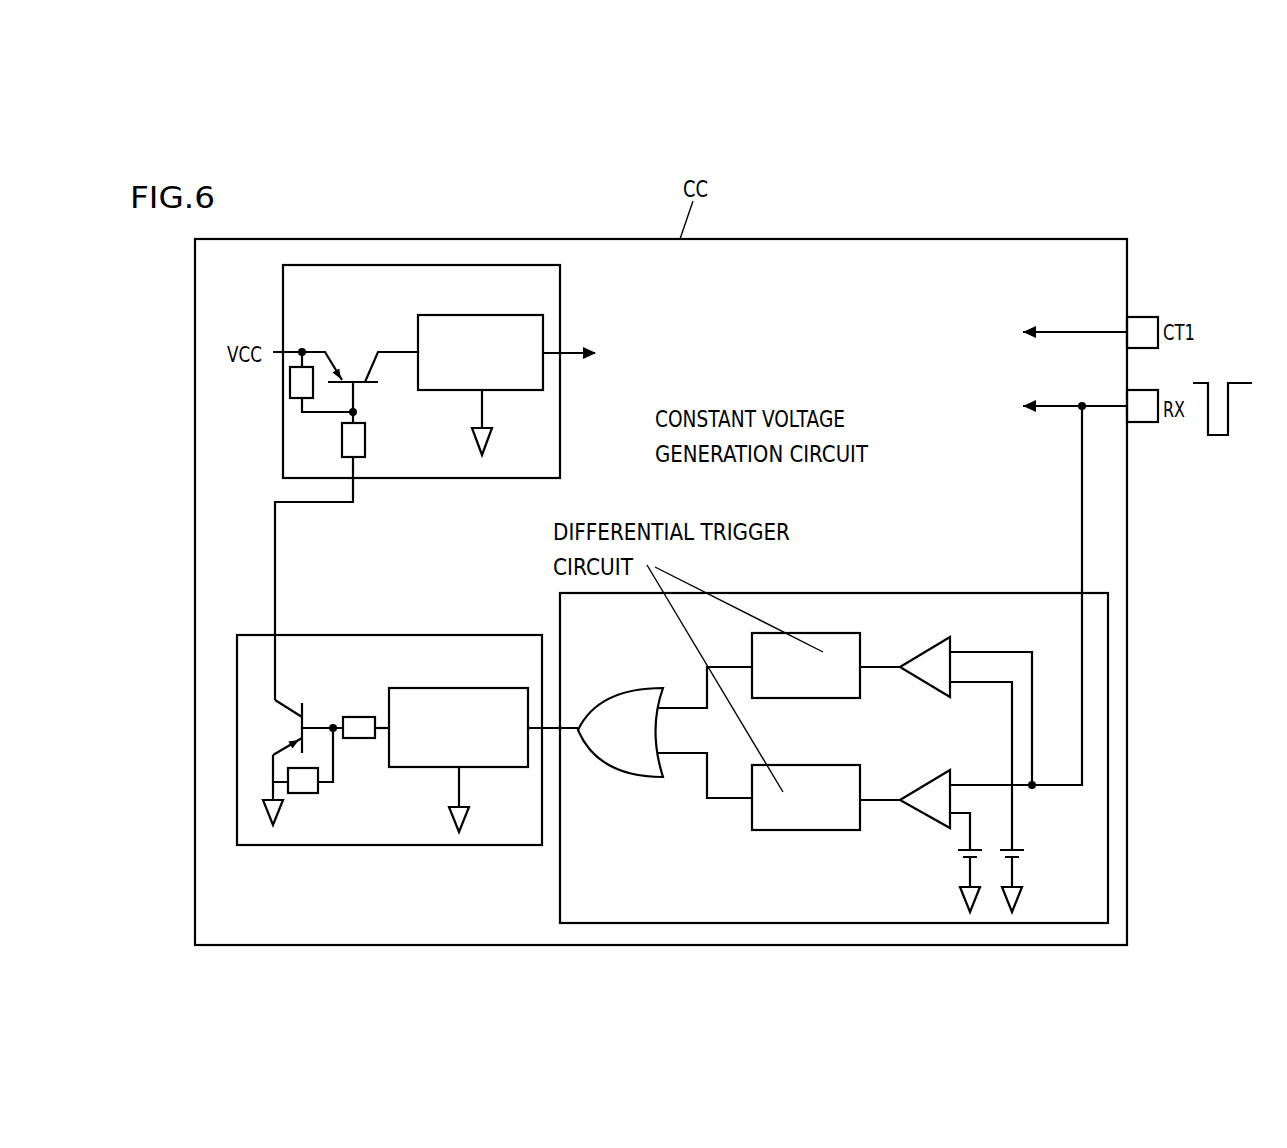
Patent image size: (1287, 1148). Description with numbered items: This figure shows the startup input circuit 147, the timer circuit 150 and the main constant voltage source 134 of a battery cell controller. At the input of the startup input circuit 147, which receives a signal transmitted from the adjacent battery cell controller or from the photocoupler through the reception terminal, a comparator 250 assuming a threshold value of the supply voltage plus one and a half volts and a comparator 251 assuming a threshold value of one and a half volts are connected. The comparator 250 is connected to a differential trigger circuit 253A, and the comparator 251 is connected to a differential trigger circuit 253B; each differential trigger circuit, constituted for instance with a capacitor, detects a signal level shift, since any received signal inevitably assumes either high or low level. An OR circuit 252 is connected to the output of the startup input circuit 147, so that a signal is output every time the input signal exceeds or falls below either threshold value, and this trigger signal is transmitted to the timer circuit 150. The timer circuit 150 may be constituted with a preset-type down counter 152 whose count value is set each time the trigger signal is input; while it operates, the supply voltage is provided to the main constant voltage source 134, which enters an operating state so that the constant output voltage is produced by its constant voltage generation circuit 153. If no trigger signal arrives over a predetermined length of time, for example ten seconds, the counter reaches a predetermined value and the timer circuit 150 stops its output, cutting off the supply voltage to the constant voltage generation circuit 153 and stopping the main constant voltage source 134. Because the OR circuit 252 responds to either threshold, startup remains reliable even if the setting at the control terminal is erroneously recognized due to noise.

The main constant voltage source 134 is at (422, 478).
The constant voltage generation circuit 153 is at (547, 372).
The timer circuit 150 is at (407, 635).
The preset-type down counter 152 is at (425, 768).
The startup input circuit 147 is at (802, 593).
The comparator 250 is at (925, 655).
The comparator 251 is at (925, 787).
The OR circuit 252 is at (627, 777).
The differential trigger circuit 253A is at (805, 700).
The differential trigger circuit 253B is at (805, 830).